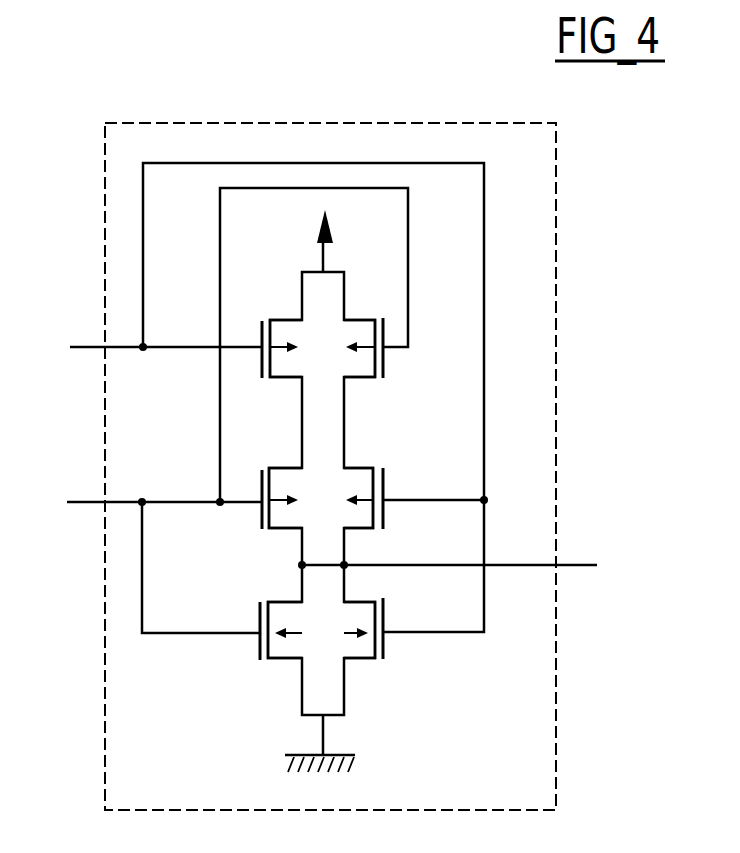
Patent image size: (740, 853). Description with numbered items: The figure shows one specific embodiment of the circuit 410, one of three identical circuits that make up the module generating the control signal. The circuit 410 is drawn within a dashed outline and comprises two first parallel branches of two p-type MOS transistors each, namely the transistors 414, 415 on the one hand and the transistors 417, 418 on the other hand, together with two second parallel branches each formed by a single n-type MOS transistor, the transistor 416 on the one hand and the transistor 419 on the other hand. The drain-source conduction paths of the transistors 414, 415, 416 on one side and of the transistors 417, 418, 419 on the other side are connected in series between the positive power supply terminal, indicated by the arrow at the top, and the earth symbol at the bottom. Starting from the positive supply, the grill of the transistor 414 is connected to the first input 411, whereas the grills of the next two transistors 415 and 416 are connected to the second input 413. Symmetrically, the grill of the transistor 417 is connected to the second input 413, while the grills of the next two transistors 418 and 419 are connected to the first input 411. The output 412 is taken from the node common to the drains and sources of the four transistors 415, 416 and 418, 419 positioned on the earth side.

The circuit 410 is at (270, 118).
The first input 411 is at (142, 343).
The output 412 is at (475, 561).
The second input 413 is at (142, 503).
The MOS transistor 414 is at (275, 329).
The MOS transistor 415 is at (273, 480).
The MOS transistor 416 is at (270, 611).
The MOS transistor 417 is at (370, 329).
The MOS transistor 418 is at (371, 480).
The MOS transistor 419 is at (387, 622).